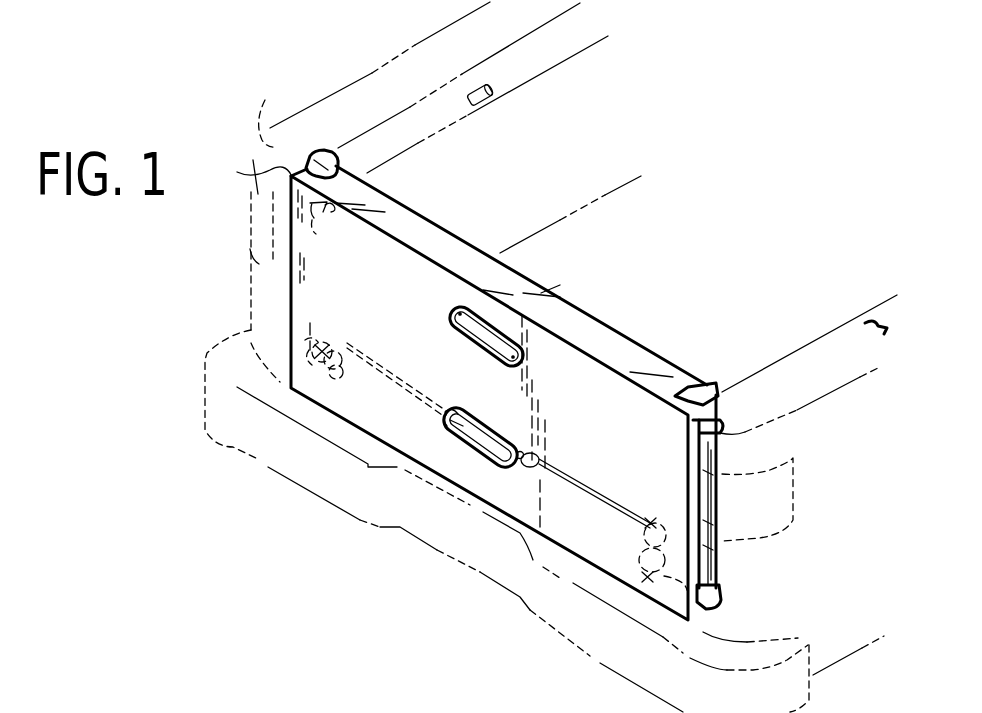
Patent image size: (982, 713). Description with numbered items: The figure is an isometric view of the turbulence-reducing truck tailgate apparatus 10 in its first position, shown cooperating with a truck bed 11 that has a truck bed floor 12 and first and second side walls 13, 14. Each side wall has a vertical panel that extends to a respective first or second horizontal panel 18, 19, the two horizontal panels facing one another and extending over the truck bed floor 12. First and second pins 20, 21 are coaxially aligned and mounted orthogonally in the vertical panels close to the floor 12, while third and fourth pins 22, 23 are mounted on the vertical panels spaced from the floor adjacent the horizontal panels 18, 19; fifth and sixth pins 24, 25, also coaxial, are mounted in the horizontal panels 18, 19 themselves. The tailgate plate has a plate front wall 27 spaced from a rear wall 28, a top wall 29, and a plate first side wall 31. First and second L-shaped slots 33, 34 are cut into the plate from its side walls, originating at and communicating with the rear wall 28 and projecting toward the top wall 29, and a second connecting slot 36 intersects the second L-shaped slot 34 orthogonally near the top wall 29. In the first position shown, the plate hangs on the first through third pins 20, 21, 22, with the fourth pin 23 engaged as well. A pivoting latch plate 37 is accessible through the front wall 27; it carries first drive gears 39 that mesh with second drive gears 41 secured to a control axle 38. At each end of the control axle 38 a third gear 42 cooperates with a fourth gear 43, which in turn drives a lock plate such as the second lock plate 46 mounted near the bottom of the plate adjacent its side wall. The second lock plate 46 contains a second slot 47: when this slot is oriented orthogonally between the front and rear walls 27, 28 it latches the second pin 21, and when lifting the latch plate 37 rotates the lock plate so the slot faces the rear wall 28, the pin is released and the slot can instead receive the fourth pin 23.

The turbulence-reducing truck tailgate apparatus 10 is at (200, 122).
The truck bed 11 is at (330, 114).
The truck bed floor 12 is at (623, 206).
The truck bed first side wall 13 is at (275, 111).
The truck bed second side wall 14 is at (773, 363).
The first horizontal panel 18 is at (543, 64).
The second horizontal panel 19 is at (817, 337).
The first pin 20 is at (307, 340).
The second pin 21 is at (722, 608).
The third pin 22 is at (320, 237).
The fourth pin 23 is at (727, 427).
The fifth pin 24 is at (478, 88).
The sixth pin 25 is at (850, 337).
The plate front wall 27 is at (607, 330).
The plate rear wall 28 is at (672, 355).
The plate top wall 29 is at (577, 320).
The plate first side wall 31 is at (255, 178).
The first L-shaped slot 33 is at (342, 160).
The second L-shaped slot 34 is at (693, 385).
The second connecting slot 36 is at (733, 410).
The pivoting latch plate 37 is at (470, 440).
The control axle 38 is at (617, 497).
The first drive gear 39 is at (531, 480).
The second drive gear 41 is at (470, 405).
The third gear 42 is at (364, 347).
The fourth gear 43 is at (352, 362).
The second lock plate 46 is at (307, 387).
The second slot 47 is at (327, 333).